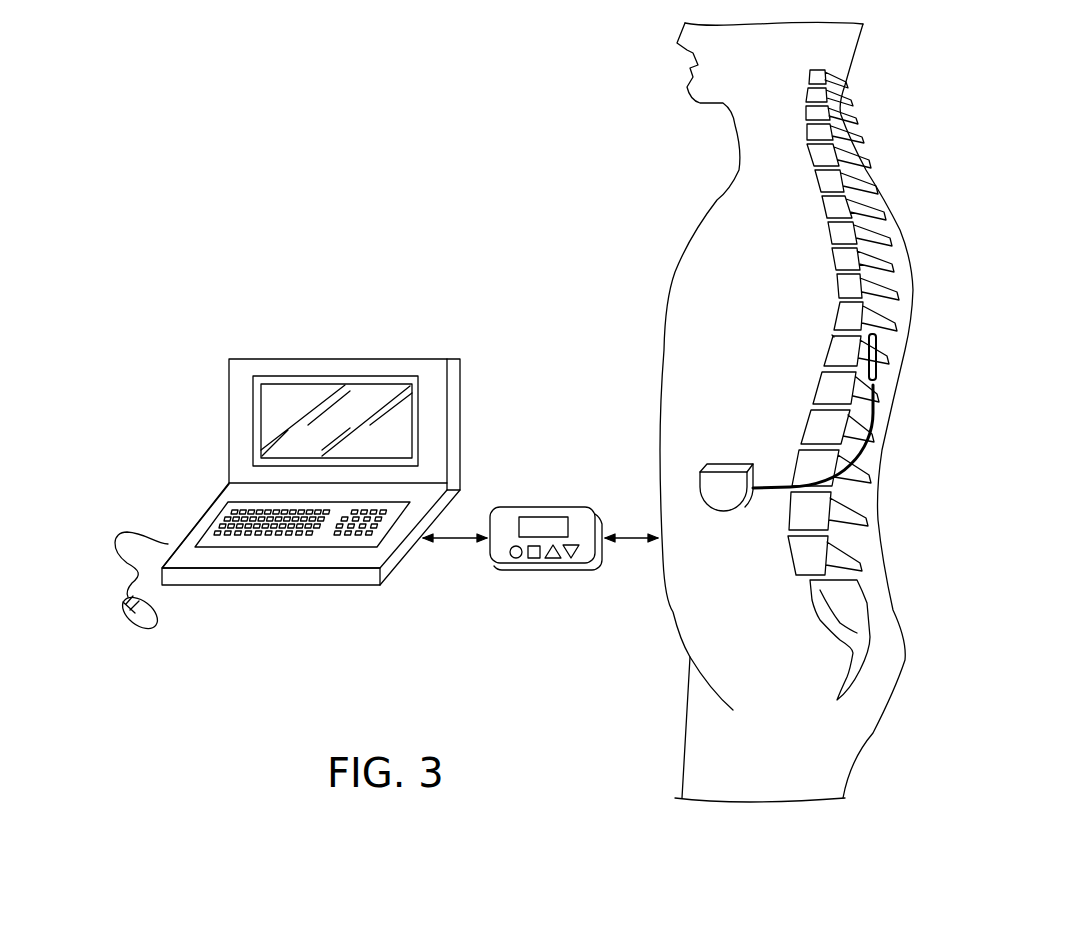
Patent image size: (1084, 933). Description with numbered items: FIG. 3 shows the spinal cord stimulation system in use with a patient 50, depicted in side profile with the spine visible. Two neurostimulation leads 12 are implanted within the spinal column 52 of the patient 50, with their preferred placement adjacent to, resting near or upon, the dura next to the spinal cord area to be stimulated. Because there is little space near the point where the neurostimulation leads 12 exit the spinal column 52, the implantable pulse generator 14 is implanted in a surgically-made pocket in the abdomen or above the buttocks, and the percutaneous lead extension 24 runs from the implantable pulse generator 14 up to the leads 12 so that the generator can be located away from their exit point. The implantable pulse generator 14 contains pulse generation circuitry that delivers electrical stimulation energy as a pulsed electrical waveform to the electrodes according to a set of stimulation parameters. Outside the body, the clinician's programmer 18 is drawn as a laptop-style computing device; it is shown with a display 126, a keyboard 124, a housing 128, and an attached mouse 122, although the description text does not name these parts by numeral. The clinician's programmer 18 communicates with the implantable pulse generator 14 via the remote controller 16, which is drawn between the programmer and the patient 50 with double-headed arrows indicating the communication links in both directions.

The implantable stimulation lead 12 is at (875, 358).
The implantable pulse generator 14 is at (727, 493).
The remote controller 16 is at (567, 477).
The clinician's programmer 18 is at (322, 353).
The percutaneous lead extension 24 is at (875, 442).
The patient 50 is at (672, 273).
The spinal column 52 is at (832, 335).
The mouse / pointing device 122 is at (130, 618).
The keyboard 124 is at (270, 545).
The display 126 is at (418, 420).
The housing 128 is at (207, 508).